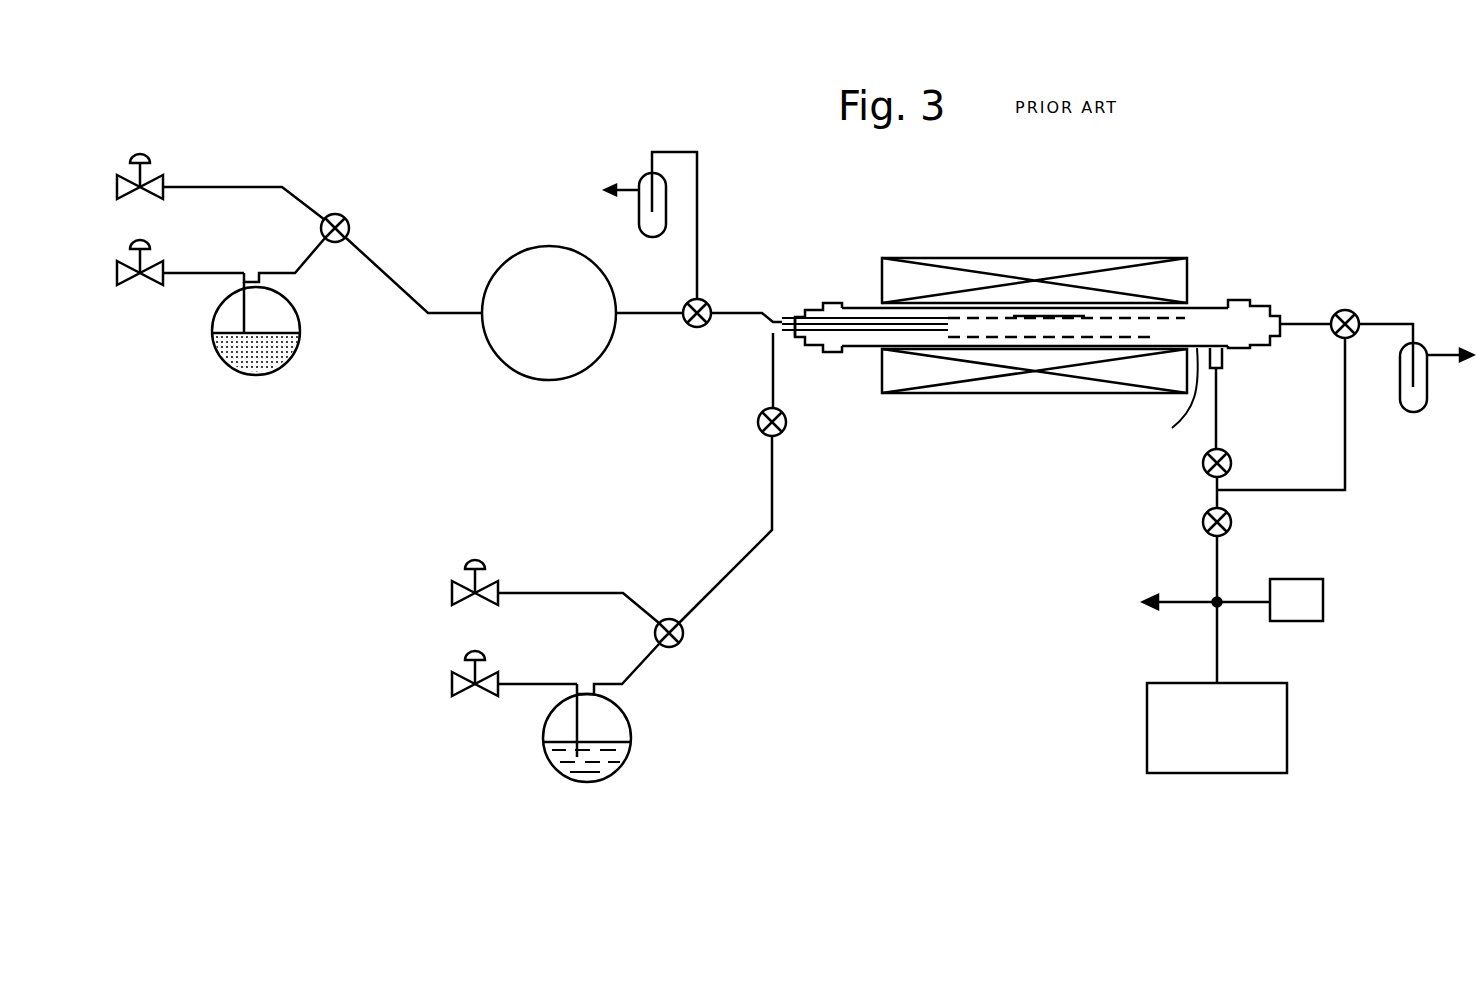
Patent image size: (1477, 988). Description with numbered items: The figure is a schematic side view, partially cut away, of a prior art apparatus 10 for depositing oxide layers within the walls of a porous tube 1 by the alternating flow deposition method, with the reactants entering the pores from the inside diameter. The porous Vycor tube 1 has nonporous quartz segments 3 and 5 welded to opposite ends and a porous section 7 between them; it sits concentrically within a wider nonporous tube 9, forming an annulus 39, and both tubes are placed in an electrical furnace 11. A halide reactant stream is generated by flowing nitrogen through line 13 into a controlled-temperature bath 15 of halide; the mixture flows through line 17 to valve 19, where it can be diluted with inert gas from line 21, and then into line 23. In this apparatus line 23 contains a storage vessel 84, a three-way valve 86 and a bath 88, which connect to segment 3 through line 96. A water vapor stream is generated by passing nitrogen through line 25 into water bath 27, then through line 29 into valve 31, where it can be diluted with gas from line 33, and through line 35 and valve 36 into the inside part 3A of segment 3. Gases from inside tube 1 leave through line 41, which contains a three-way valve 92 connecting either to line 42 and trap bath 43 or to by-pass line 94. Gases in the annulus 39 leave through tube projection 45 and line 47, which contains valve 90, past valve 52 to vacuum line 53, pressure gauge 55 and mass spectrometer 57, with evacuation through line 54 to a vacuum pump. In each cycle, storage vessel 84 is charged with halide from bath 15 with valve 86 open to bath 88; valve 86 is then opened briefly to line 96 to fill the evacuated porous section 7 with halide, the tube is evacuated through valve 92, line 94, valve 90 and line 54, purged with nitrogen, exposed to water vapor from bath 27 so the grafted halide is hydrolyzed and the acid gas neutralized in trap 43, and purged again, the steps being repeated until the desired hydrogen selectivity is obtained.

The porous tube 1 is at (1078, 313).
The nonporous segment 3 is at (846, 310).
The inside part of nonporous segment 3A is at (858, 318).
The nonporous segment 5 is at (1214, 312).
The porous section 7 is at (1013, 314).
The outer concentric nonporous tube 9 is at (853, 352).
The apparatus 10 is at (1041, 393).
The electrical furnace 11 is at (966, 257).
The line 13 is at (197, 271).
The bath 15 is at (223, 362).
The line 17 is at (305, 250).
The valve 19 is at (335, 213).
The line 21 is at (219, 184).
The line 23 is at (385, 272).
The line 25 is at (522, 683).
The water bath 27 is at (628, 749).
The line 29 is at (638, 674).
The valve 31 is at (684, 636).
The line 33 is at (567, 592).
The line 35 is at (748, 560).
The valve 36 is at (786, 430).
The annulus 39 is at (1170, 400).
The line 41 is at (1305, 318).
The line 42 is at (1380, 318).
The bath 43 is at (1425, 400).
The tube projection 45 is at (1222, 372).
The line 47 is at (1218, 437).
The valve 52 is at (1205, 514).
The vacuum line 53 is at (1220, 577).
The line 54 is at (1175, 601).
The pressure gauge 55 is at (1320, 607).
The mass spectrometer 57 is at (1194, 747).
The storage vessel 84 is at (524, 247).
The three-way valve 86 is at (701, 331).
The bath 88 is at (640, 178).
The valve 90 is at (1232, 462).
The three-way valve 92 is at (1350, 308).
The by-pass line 94 is at (1346, 465).
The line 96 is at (737, 301).